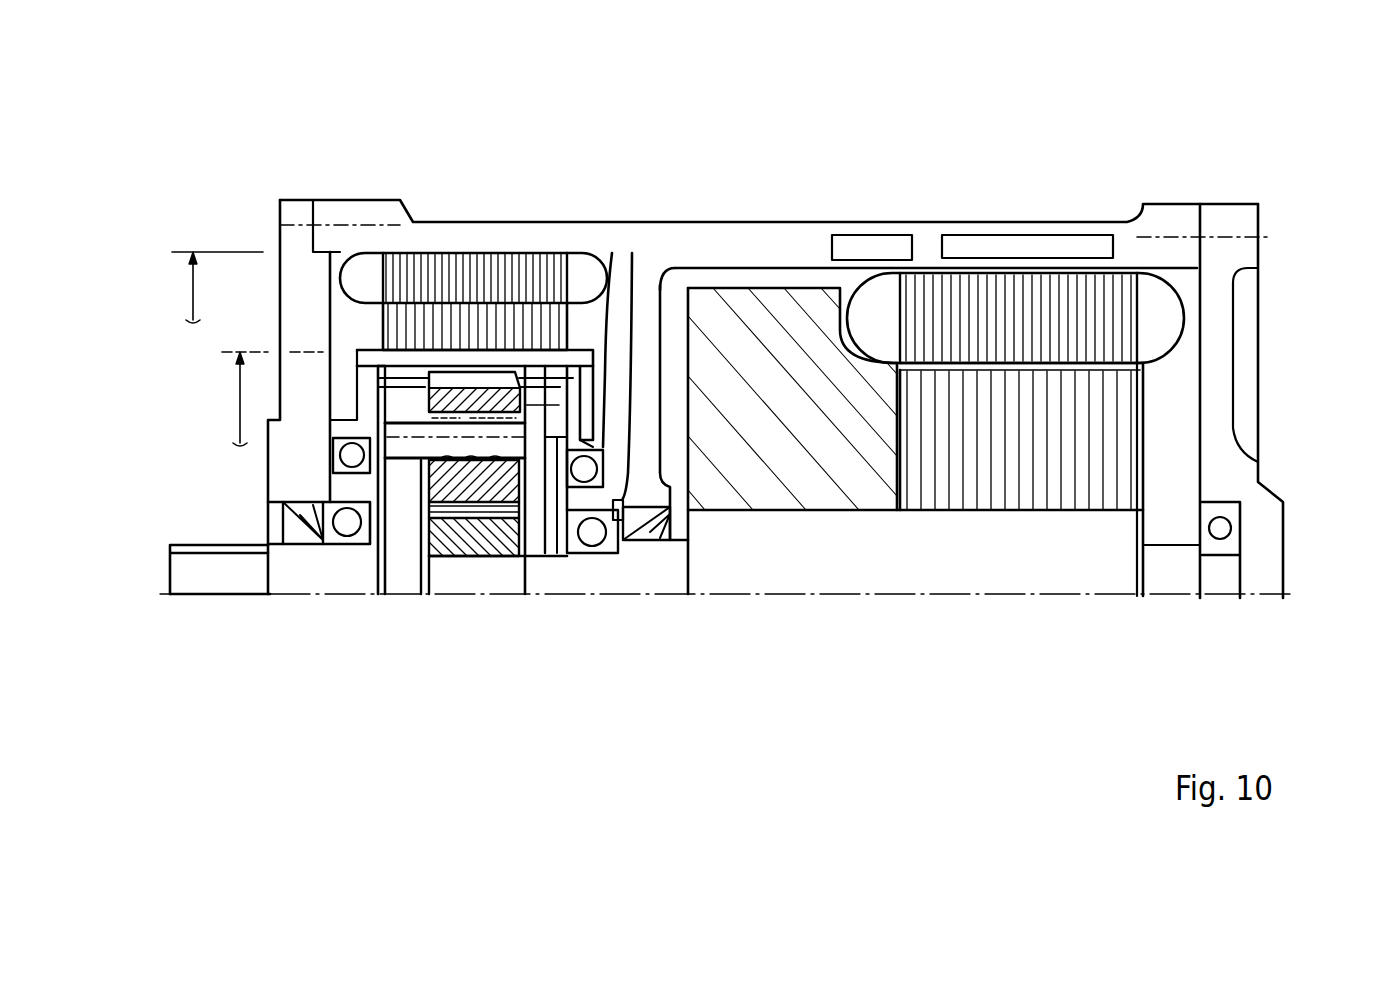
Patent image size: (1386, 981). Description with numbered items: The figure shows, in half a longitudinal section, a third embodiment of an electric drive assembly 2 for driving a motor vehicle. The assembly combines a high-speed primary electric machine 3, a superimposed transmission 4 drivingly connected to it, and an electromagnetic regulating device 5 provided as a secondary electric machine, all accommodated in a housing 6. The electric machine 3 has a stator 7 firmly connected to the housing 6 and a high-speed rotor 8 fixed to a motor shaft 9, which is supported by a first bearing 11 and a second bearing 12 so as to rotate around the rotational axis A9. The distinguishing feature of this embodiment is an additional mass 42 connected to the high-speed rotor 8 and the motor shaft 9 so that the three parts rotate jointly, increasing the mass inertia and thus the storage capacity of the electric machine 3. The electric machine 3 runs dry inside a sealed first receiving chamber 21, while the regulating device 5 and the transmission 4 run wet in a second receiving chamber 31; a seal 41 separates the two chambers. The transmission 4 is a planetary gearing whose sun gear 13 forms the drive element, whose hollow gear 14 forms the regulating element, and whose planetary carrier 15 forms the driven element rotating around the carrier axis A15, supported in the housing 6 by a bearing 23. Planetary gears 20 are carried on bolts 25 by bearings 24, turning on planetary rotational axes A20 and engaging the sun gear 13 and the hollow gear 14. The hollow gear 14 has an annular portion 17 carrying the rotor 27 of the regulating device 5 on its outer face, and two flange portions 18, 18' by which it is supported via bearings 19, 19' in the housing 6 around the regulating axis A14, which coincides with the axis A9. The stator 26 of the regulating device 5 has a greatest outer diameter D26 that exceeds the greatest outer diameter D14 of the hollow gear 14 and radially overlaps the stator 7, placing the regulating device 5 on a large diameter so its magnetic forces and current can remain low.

The electric drive assembly 2 is at (727, 106).
The electric machine 3 is at (923, 250).
The superimposed transmission 4 is at (414, 360).
The electromagnetic regulating device 5 is at (460, 240).
The housing 6 is at (827, 214).
The stator 7 is at (991, 266).
The high-speed rotor 8 is at (1013, 512).
The motor shaft 9 is at (835, 578).
The first bearing 11 is at (1220, 549).
The second bearing 12 is at (593, 557).
The sun gear 13 is at (460, 558).
The hollow gear 14 is at (532, 378).
The planetary carrier 15 is at (217, 582).
The annular portion 17 is at (440, 360).
The flange portion 18 is at (633, 299).
The flange portion 18' is at (301, 287).
The bearing 19 is at (599, 582).
The bearing 19' is at (353, 578).
The planetary gears 20 is at (480, 558).
The first receiving chamber 21 is at (1175, 386).
The bearing 23 is at (347, 540).
The bearings 24 is at (507, 558).
The bolts 25 is at (430, 558).
The stator 26 is at (505, 254).
The rotor 27 is at (550, 254).
The second receiving chamber 31 is at (640, 250).
The seal 41 is at (663, 557).
The additional mass 42 is at (758, 475).
The rotational axis A9 is at (922, 597).
The regulating axis A14 is at (540, 557).
The carrier axis A15 is at (268, 577).
The planetary rotational axes A20 is at (552, 556).
The greatest outer diameter D26 is at (217, 287).
The greatest outer diameter D14 is at (254, 399).